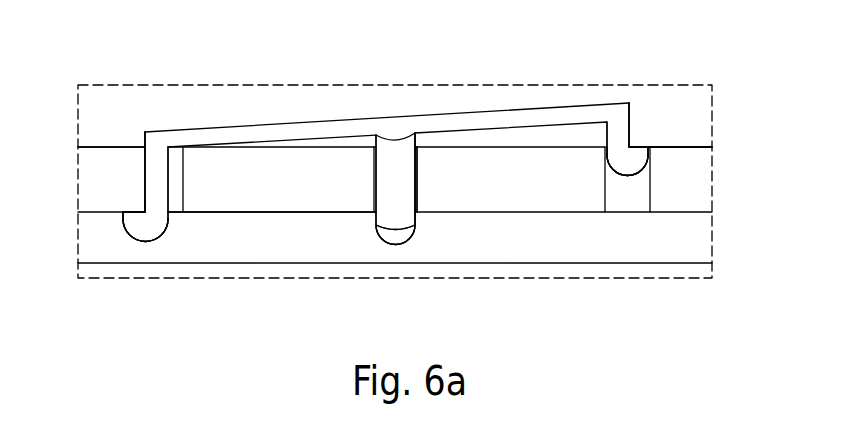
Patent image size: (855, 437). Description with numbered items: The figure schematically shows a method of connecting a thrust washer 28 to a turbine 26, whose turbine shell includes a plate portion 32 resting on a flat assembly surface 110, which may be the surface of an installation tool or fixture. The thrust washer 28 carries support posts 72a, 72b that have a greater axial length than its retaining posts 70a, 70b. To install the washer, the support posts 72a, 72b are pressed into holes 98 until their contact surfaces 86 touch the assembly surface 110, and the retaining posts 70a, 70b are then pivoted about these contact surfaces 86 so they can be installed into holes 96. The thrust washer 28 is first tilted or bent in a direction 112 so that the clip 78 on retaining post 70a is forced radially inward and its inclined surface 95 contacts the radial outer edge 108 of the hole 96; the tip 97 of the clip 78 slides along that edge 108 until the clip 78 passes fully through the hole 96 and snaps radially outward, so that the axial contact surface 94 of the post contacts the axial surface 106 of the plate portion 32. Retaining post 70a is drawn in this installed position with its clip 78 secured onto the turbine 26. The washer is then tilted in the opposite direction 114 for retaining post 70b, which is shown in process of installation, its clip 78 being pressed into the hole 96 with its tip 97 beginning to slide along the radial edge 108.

The turbine 26 is at (700, 147).
The thrust washer 28 is at (218, 135).
The plate portion 32 is at (700, 147).
The retaining post 70a is at (153, 155).
The retaining post 70b is at (619, 124).
The support post 72a is at (395, 162).
The support post 72b is at (395, 162).
The clip 78 is at (620, 162).
The contact surface 86 is at (395, 263).
The axial contact surface 94 is at (132, 212).
The inclined surface 95 is at (128, 230).
The hole 96 is at (175, 200).
The tip 97 is at (651, 146).
The hole 98 is at (417, 187).
The axial surface 106 is at (282, 213).
The radial outer edge 108 is at (143, 173).
The assembly surface 110 is at (555, 265).
The direction 112 is at (278, 63).
The direction 114 is at (603, 63).